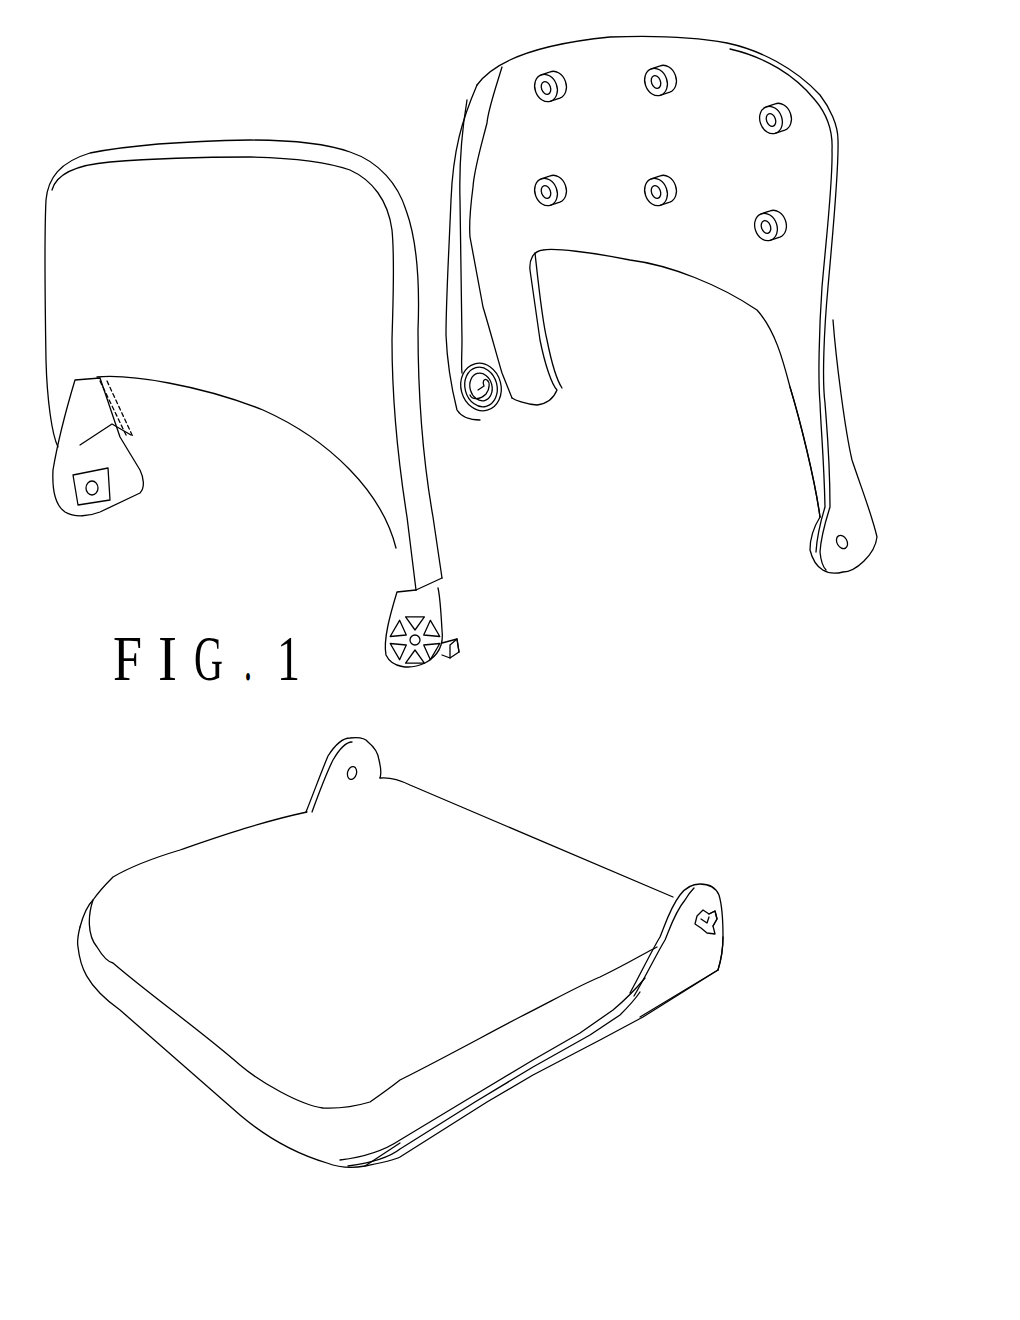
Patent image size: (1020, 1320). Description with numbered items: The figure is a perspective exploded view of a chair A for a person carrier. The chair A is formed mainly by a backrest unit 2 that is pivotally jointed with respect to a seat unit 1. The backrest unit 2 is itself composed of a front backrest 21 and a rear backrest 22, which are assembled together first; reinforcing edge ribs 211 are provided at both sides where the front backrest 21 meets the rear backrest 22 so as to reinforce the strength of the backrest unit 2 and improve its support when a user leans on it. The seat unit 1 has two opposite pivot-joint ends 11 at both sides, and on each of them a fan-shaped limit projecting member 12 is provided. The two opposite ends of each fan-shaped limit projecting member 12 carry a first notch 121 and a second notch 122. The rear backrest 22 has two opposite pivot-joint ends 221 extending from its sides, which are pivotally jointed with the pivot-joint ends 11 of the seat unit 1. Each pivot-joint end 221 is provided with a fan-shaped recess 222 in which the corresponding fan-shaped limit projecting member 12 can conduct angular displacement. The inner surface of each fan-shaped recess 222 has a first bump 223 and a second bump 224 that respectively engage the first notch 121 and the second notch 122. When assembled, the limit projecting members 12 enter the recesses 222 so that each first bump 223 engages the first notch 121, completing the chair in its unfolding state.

The chair A is at (635, 785).
The seat unit 1 is at (663, 987).
The pivot-joint ends 11 is at (700, 900).
The fan-shaped limit projecting member 12 is at (717, 928).
The first notch 121 is at (720, 908).
The second notch 122 is at (720, 970).
The backrest unit 2 is at (720, 474).
The front backrest 21 is at (342, 407).
The reinforcing edge ribs 211 is at (127, 417).
The rear backrest 22 is at (708, 253).
The pivot-joint ends 221 is at (467, 413).
The fan-shaped recess 222 is at (488, 415).
The first bump 223 is at (497, 373).
The second bump 224 is at (445, 282).